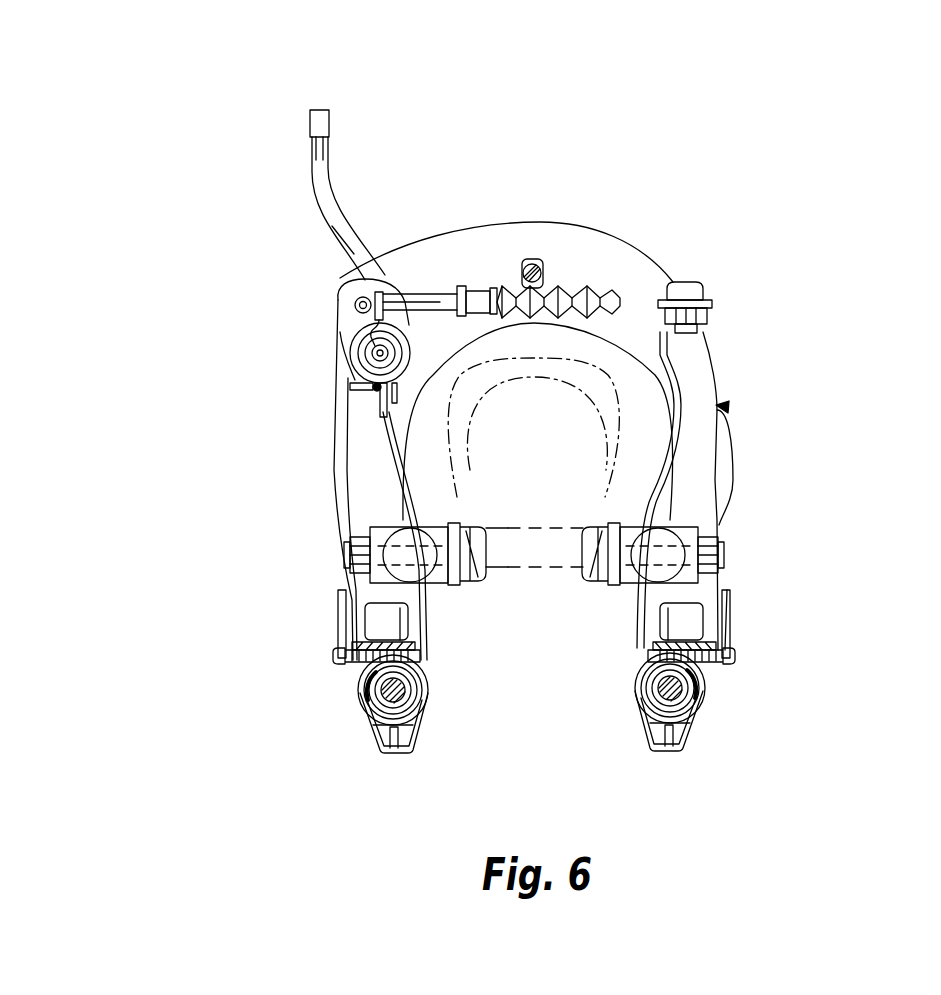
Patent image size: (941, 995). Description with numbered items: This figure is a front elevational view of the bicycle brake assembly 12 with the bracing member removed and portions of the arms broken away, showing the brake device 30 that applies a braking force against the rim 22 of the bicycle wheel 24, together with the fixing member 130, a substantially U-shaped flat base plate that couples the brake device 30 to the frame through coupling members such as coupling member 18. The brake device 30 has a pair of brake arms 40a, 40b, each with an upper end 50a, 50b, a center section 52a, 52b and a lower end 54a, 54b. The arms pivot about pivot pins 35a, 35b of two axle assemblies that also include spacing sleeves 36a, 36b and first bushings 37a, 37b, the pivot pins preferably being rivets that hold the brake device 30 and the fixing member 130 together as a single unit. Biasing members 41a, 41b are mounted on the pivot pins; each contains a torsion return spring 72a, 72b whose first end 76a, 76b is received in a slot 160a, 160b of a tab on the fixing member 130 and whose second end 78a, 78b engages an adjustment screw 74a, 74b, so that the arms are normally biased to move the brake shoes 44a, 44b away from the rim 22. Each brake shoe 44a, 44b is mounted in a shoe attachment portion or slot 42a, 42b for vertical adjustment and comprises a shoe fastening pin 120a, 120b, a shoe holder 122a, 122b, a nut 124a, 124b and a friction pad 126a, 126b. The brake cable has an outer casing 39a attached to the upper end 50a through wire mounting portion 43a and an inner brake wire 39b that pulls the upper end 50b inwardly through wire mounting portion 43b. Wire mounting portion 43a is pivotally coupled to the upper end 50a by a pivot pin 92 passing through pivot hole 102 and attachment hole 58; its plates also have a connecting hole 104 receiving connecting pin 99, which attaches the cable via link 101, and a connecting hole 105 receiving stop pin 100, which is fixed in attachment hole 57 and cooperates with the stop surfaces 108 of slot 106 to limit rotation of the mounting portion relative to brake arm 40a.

The bicycle brake assembly 12 is at (700, 186).
The coupling member 18 is at (545, 262).
The rim 22 is at (520, 572).
The bicycle wheel 24 is at (620, 387).
The brake device 30 is at (728, 406).
The pivot pin 35a is at (381, 691).
The pivot pin 35b is at (707, 688).
The spacing sleeve 36a is at (383, 689).
The spacing sleeve 36b is at (683, 695).
The first bushing 37a is at (366, 715).
The first bushing 37b is at (680, 710).
The outer casing 39a is at (335, 215).
The inner brake wire 39b is at (505, 297).
The brake arm 40a is at (347, 458).
The brake arm 40b is at (720, 448).
The biasing member 41a is at (283, 707).
The biasing member 41b is at (830, 735).
The shoe attachment portion 42a is at (422, 588).
The shoe attachment portion 42b is at (632, 590).
The wire mounting portion 43a is at (330, 285).
The wire mounting portion 43b is at (705, 286).
The brake shoe 44a is at (470, 585).
The brake shoe 44b is at (598, 580).
The upper end 50a is at (363, 393).
The upper end 50b is at (700, 335).
The center section 52a is at (363, 503).
The center section 52b is at (710, 480).
The lower end 54a is at (365, 625).
The lower end 54b is at (705, 612).
The attachment hole 57 is at (372, 388).
The attachment hole 58 is at (372, 352).
The return spring 72a is at (358, 684).
The return spring 72b is at (712, 690).
The adjustment screw 74a is at (330, 657).
The adjustment screw 74b is at (712, 650).
The first end 76a is at (400, 745).
The first end 76b is at (670, 745).
The second end 78a is at (426, 679).
The second end 78b is at (713, 660).
The pivot pin 92 is at (376, 349).
The connecting pin 99 is at (355, 305).
The stop pin 100 is at (372, 393).
The link 101 is at (437, 290).
The pivot hole 102 is at (380, 345).
The connecting hole 104 is at (357, 300).
The connecting hole 105 is at (365, 392).
The slot 106 is at (440, 362).
The stop surfaces 108 is at (368, 384).
The shoe fastening pin 120a is at (350, 553).
The shoe fastening pin 120b is at (700, 548).
The shoe holder 122a is at (456, 508).
The shoe holder 122b is at (625, 515).
The nut 124a is at (350, 577).
The nut 124b is at (702, 568).
The friction pad 126a is at (488, 535).
The friction pad 126b is at (590, 525).
The fixing member 130 is at (654, 263).
The slot 160a is at (388, 755).
The slot 160b is at (667, 722).